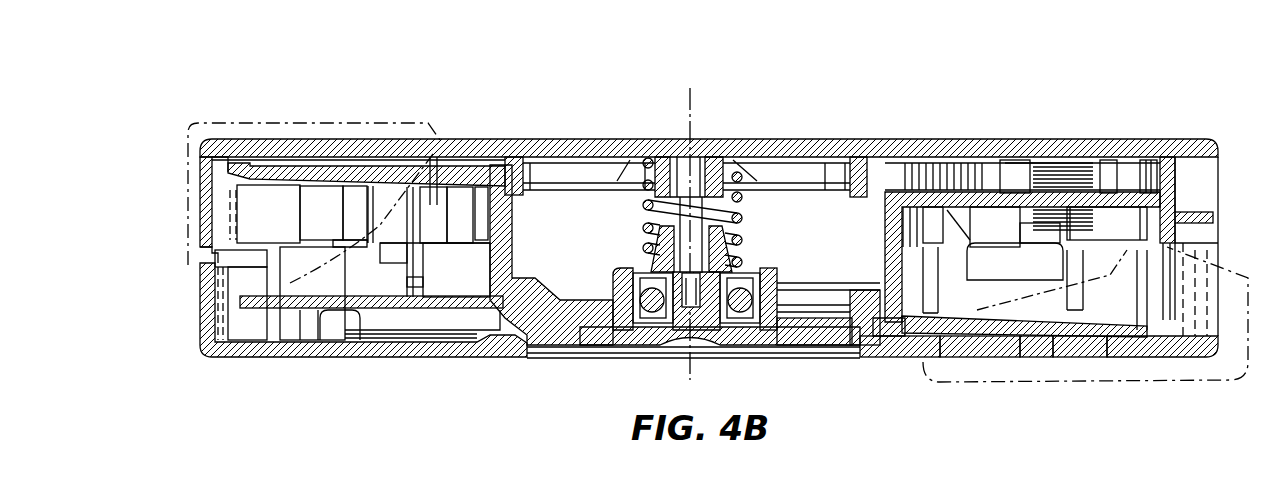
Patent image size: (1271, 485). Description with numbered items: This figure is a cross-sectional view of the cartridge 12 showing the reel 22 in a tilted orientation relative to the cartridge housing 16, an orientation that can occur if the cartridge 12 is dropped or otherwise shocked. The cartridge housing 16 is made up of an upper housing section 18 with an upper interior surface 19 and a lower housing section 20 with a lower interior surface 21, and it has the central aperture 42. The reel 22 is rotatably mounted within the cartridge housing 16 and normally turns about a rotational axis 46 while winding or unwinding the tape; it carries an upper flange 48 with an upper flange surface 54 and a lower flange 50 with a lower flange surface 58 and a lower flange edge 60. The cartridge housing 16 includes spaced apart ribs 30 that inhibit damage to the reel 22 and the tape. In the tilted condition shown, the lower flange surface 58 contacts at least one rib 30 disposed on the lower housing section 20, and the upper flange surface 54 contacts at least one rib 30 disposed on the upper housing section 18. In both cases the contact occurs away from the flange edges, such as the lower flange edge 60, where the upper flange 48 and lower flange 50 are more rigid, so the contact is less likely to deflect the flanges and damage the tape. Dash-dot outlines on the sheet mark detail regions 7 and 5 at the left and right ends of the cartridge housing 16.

The cartridge 12 is at (1004, 112).
The upper housing section 18 is at (840, 140).
The cartridge housing 16 is at (927, 140).
The rotational axis 46 is at (688, 105).
The detail region 7 is at (309, 194).
The upper interior surface 19 is at (268, 153).
The ribs 30 is at (306, 153).
The upper flange surface 54 is at (370, 153).
The upper flange 48 is at (433, 150).
The lower flange surface 58 is at (385, 303).
The central aperture 42 is at (600, 352).
The lower housing section 20 is at (893, 358).
The detail region 5 is at (1072, 271).
The reel 22 is at (1012, 188).
The lower interior surface 21 is at (1055, 352).
The lower flange 50 is at (1110, 352).
The lower flange edge 60 is at (1172, 350).